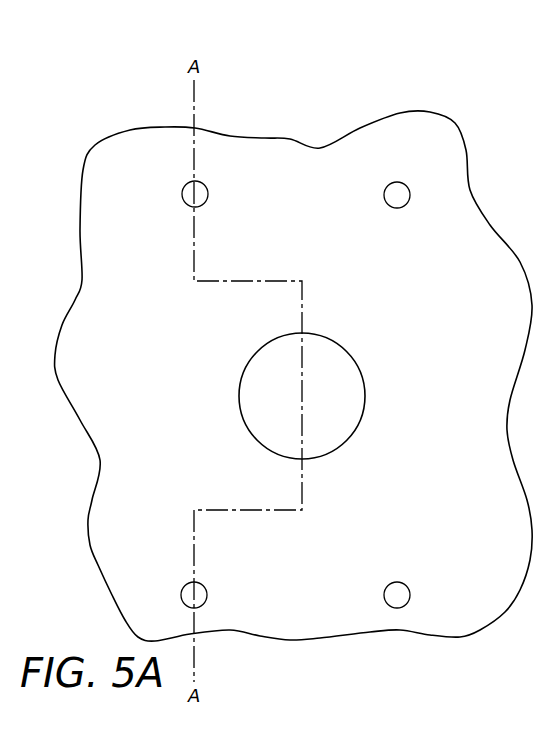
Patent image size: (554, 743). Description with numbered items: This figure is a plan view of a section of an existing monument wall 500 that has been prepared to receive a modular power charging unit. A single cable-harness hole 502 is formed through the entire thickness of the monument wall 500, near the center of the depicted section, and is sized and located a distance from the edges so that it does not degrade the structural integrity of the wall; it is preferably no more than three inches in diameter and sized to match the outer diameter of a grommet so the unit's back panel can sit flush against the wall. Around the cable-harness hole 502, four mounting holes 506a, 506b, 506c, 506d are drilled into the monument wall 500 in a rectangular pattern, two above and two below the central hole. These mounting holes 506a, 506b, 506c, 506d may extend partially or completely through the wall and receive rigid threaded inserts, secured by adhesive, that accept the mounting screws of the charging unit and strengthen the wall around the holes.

The monument wall 500 is at (108, 84).
The cable-harness hole 502 is at (345, 352).
The mounting hole 506a is at (182, 194).
The mounting hole 506b is at (397, 208).
The mounting hole 506c is at (197, 582).
The mounting hole 506d is at (397, 582).